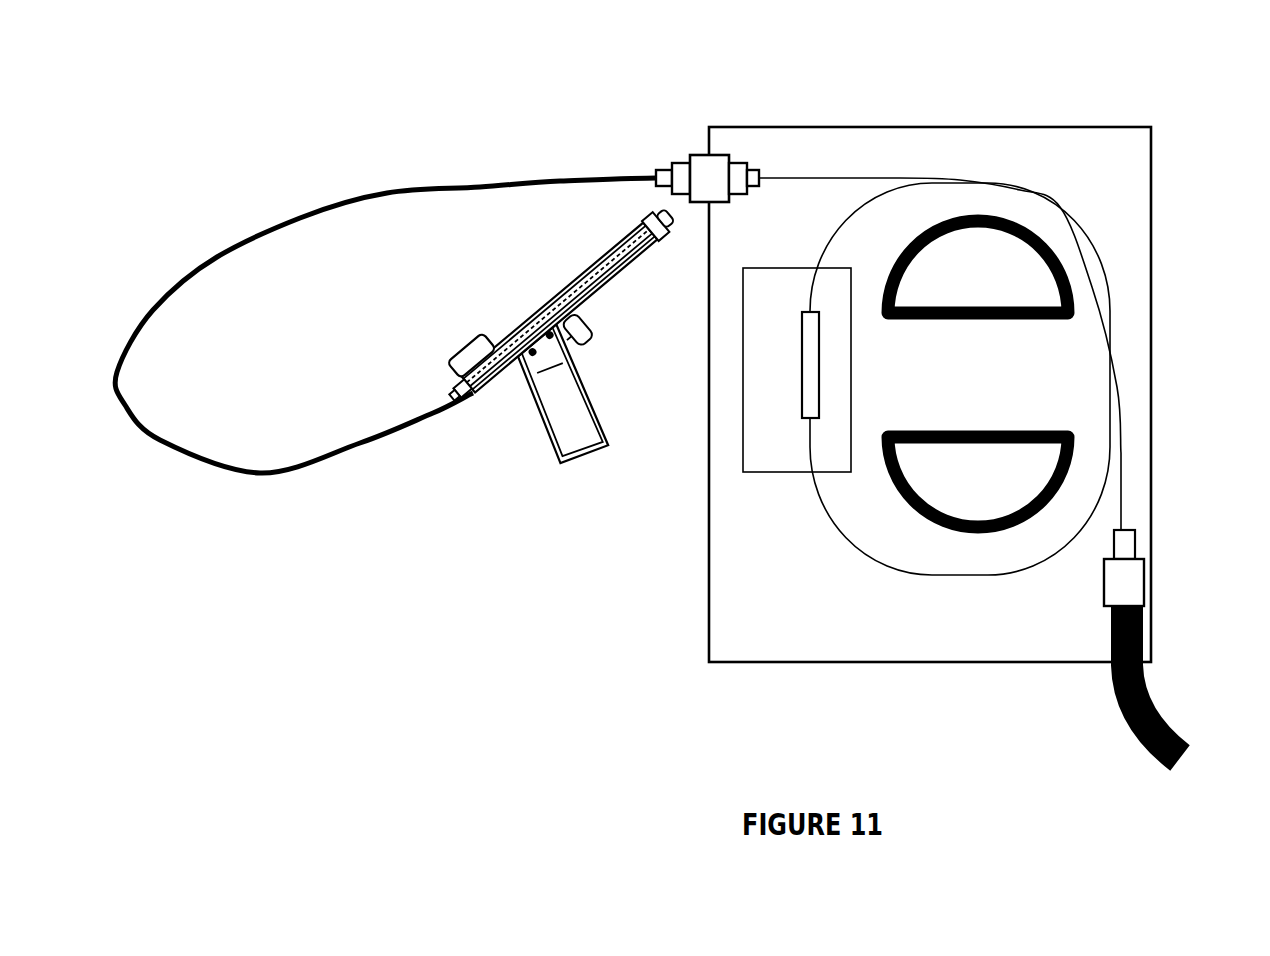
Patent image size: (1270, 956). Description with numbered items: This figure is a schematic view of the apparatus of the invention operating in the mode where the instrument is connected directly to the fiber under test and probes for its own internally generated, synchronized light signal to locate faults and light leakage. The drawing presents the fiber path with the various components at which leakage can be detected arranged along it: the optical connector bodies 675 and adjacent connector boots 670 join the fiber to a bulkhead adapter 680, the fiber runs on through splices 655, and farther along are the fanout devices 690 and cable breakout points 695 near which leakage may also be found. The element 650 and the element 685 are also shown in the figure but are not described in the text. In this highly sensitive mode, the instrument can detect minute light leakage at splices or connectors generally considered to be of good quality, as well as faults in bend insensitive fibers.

The spray gun 650 is at (558, 470).
The splice 655 is at (808, 408).
The connector boot 670 is at (762, 167).
The optical connector body 675 is at (740, 163).
The bulkhead adapter 680 is at (700, 167).
The hose 685 is at (1023, 182).
The fanout device 690 is at (1125, 541).
The cable breakout point 695 is at (1125, 570).